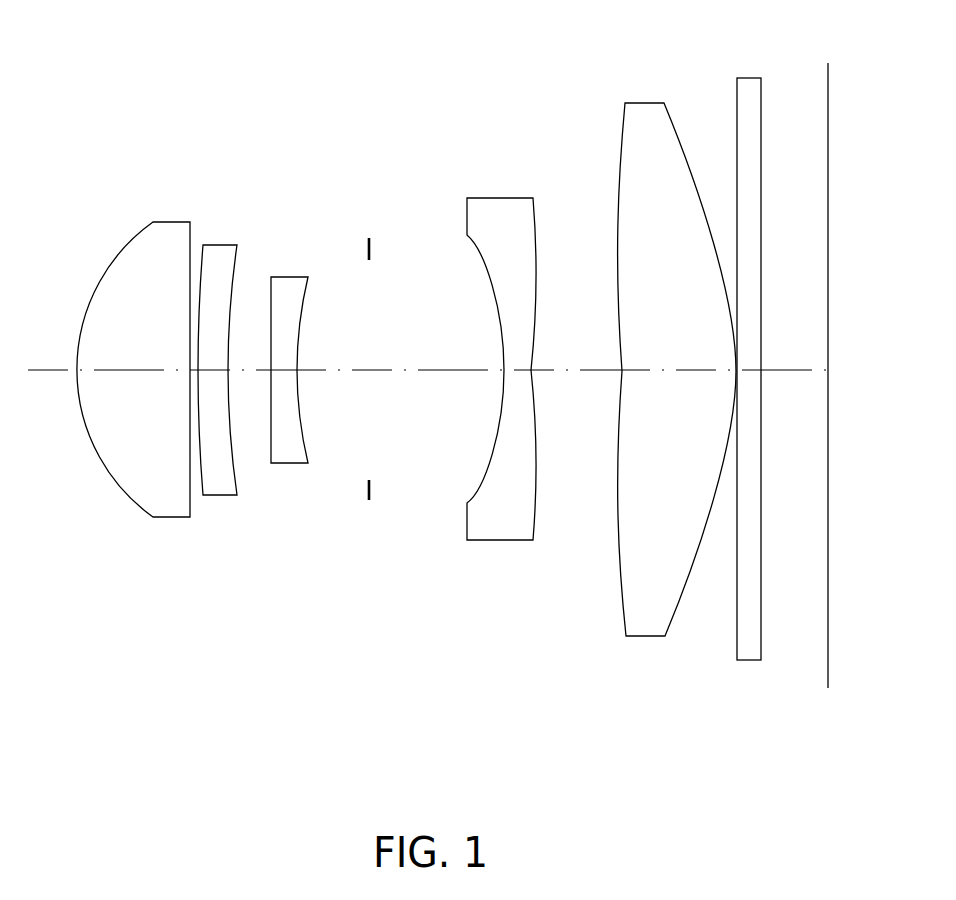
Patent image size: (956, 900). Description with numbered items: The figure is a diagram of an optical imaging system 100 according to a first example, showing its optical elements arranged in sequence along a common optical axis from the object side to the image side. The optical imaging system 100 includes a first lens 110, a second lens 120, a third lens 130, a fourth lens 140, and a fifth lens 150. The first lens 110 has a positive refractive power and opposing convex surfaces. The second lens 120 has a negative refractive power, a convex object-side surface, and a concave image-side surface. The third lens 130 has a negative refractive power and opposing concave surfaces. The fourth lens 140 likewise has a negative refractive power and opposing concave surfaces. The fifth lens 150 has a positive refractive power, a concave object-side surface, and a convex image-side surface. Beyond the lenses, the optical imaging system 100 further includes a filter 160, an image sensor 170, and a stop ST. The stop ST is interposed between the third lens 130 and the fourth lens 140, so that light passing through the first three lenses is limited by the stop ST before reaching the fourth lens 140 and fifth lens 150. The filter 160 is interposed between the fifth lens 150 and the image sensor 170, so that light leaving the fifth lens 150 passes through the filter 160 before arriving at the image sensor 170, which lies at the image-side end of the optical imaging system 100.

The optical imaging system 100 is at (303, 128).
The stop ST is at (370, 240).
The first lens 110 is at (145, 497).
The second lens 120 is at (225, 487).
The third lens 130 is at (297, 455).
The fourth lens 140 is at (497, 528).
The fifth lens 150 is at (643, 623).
The filter 160 is at (750, 650).
The image sensor 170 is at (828, 690).